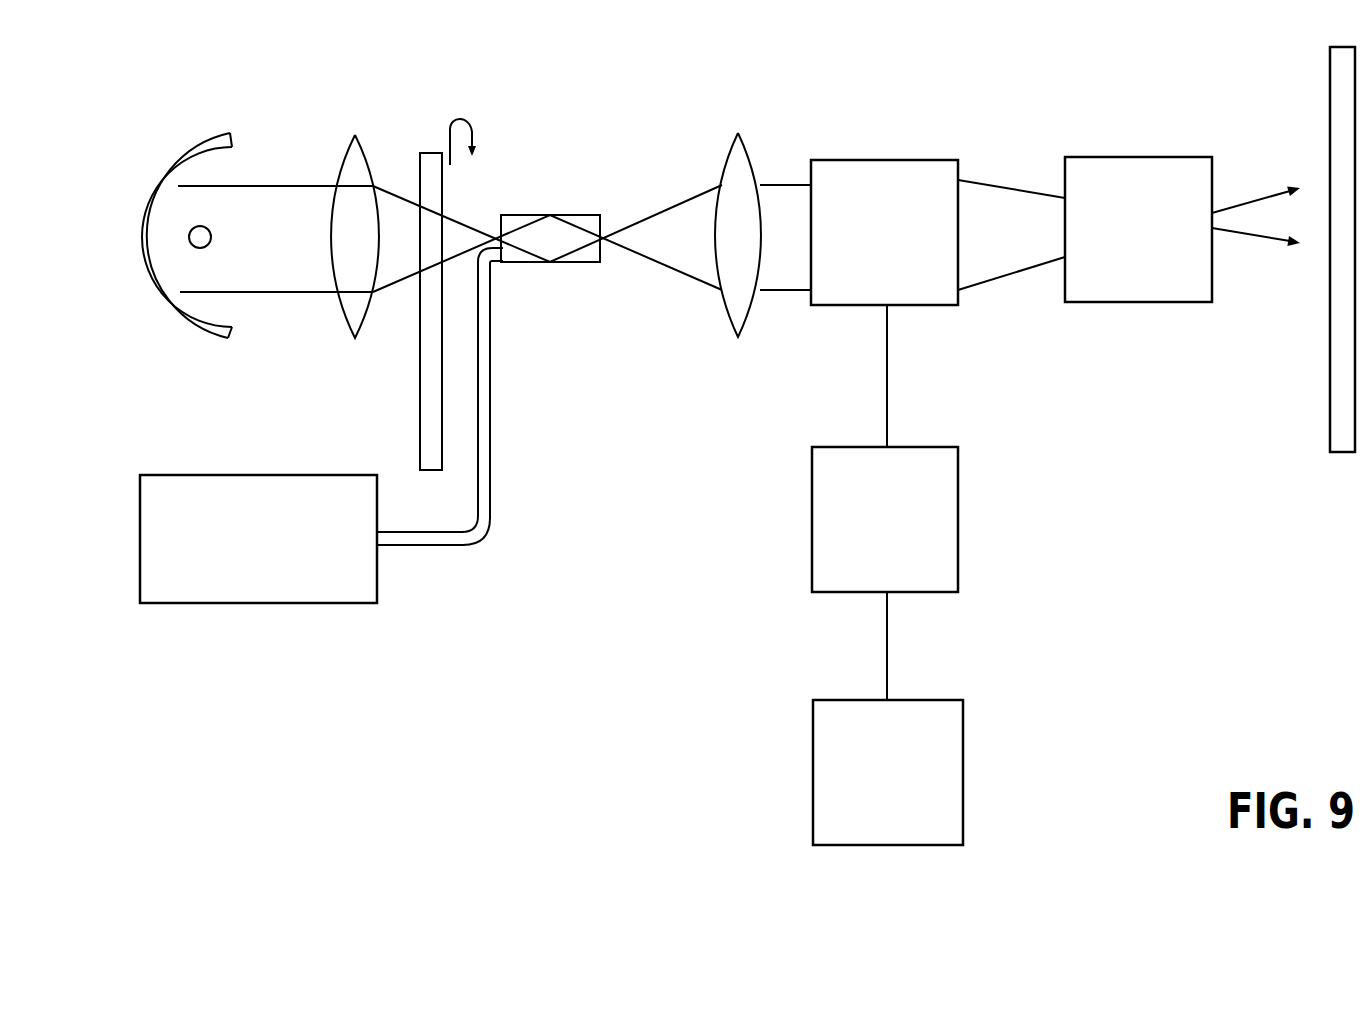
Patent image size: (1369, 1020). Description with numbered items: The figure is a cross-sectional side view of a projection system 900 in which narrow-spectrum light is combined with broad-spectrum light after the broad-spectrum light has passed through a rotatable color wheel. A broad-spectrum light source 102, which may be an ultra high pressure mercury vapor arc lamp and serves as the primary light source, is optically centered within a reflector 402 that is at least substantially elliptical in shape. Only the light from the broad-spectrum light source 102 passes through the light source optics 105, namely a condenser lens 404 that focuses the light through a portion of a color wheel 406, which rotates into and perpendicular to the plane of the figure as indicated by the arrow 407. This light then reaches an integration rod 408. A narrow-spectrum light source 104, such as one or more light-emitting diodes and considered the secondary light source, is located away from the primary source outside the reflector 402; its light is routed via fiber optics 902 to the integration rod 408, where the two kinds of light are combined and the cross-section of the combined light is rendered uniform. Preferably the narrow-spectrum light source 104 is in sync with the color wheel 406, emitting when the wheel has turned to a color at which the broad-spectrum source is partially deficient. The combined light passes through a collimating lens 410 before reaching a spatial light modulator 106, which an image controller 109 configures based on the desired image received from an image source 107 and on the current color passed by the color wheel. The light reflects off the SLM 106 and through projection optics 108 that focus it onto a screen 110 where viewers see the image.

The broad-spectrum light source 102 is at (207, 247).
The narrow-spectrum light source 104 is at (152, 605).
The light source optics 105 is at (760, 93).
The spatial light modulator (SLM) 106 is at (893, 160).
The image source 107 is at (963, 723).
The projection optics 108 is at (1168, 157).
The image controller 109 is at (958, 465).
The screen 110 is at (1330, 393).
The reflector 402 is at (167, 175).
The condenser lens 404 is at (348, 337).
The color wheel 406 is at (420, 427).
The arrow 407 is at (450, 120).
The integration rod 408 is at (573, 263).
The collimating lens 410 is at (737, 332).
The system 900 is at (464, 748).
The fiber optics 902 is at (491, 457).